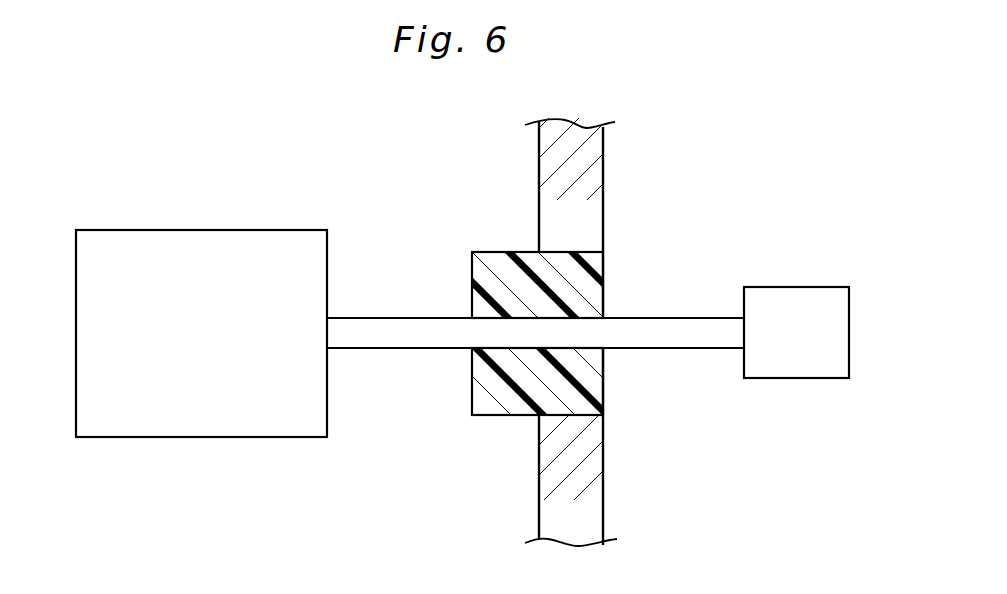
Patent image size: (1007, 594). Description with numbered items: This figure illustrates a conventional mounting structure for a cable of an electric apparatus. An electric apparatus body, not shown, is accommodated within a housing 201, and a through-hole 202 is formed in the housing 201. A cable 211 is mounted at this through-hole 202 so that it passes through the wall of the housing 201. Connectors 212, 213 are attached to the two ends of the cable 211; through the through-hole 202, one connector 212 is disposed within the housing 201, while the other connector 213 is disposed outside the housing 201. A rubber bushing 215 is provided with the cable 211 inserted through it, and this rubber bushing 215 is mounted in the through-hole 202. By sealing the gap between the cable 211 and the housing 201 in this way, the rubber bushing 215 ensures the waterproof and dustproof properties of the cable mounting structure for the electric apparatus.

The housing 201 is at (604, 161).
The through-hole 202 is at (603, 263).
The cable 211 is at (385, 340).
The connector 212 is at (798, 303).
The connector 213 is at (187, 243).
The rubber bushing 215 is at (503, 260).